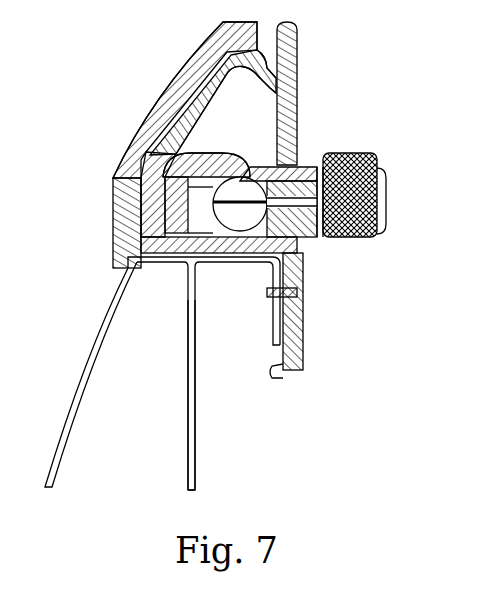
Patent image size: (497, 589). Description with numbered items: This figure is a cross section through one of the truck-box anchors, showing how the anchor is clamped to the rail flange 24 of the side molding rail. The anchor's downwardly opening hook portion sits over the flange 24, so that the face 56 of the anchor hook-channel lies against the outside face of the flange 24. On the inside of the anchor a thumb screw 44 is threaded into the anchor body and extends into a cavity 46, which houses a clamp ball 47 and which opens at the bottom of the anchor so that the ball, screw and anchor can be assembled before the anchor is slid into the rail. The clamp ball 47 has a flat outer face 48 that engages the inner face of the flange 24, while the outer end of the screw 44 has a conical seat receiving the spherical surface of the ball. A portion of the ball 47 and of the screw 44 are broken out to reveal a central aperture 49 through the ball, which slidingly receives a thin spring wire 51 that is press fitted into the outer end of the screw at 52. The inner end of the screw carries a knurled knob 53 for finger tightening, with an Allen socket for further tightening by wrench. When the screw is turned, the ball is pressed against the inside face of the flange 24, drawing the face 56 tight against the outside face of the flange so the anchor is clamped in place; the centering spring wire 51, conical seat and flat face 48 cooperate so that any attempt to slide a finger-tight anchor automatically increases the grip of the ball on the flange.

The rail flange 24 is at (200, 213).
The thumb screw 44 is at (300, 256).
The cavity 46 is at (253, 178).
The clamp ball 47 is at (275, 163).
The flat outer face 48 is at (215, 192).
The central aperture 49 is at (218, 203).
The spring wire 51 is at (235, 200).
The press fit location 52 is at (302, 243).
The knurled knob 53 is at (367, 155).
The face of the anchor hook-channel 56 is at (205, 265).